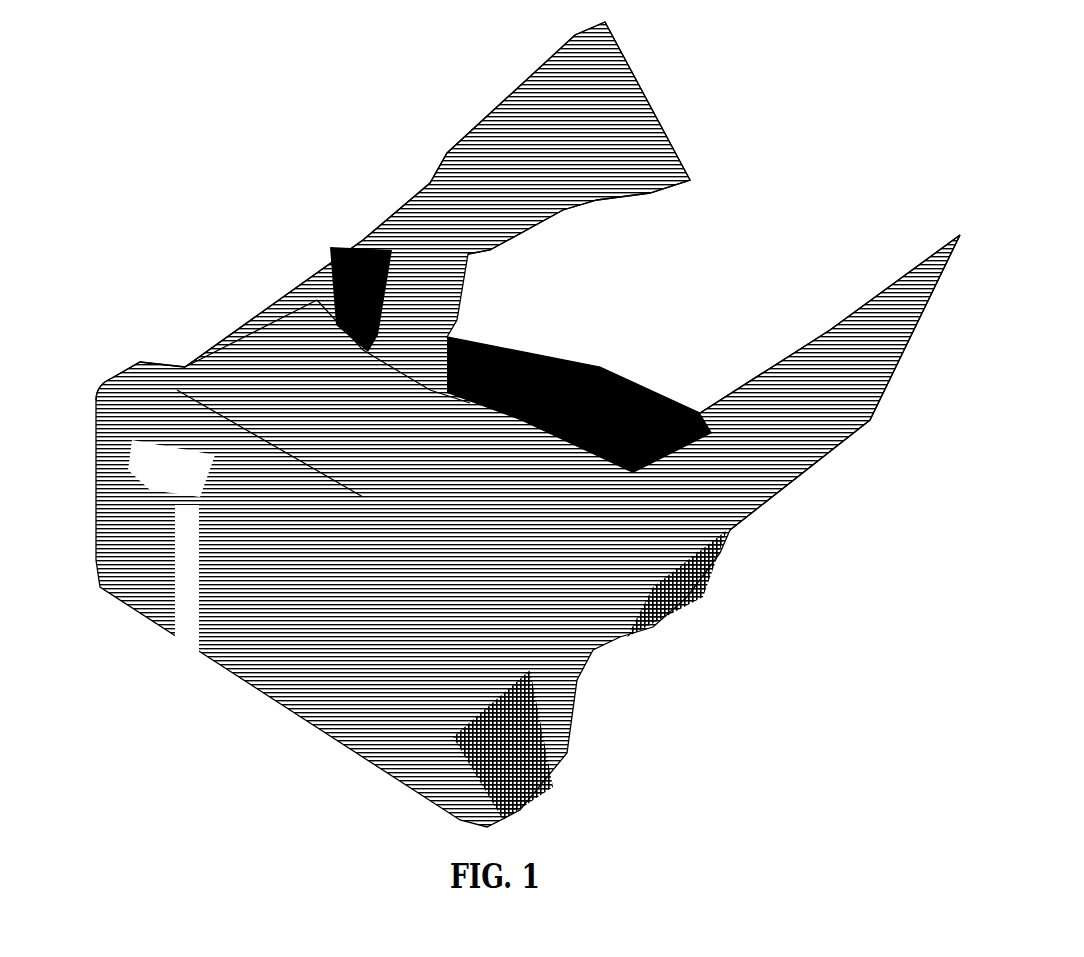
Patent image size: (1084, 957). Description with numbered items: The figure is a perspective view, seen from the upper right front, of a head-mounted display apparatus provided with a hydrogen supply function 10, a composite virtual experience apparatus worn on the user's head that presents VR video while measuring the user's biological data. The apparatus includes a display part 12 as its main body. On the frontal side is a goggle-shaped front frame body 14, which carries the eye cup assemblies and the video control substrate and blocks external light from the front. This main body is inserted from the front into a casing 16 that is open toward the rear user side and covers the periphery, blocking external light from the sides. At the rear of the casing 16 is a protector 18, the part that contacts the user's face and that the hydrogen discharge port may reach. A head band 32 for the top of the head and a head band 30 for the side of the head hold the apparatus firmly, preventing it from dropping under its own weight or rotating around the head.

The head-mounted display apparatus provided with the hydrogen supply function 10 is at (760, 658).
The display part 12 is at (215, 130).
The front frame body 14 is at (118, 372).
The casing 16 is at (272, 352).
The protector 18 is at (330, 320).
The head band for the side of the head 30 is at (830, 428).
The head band for the top of the head 32 is at (540, 100).